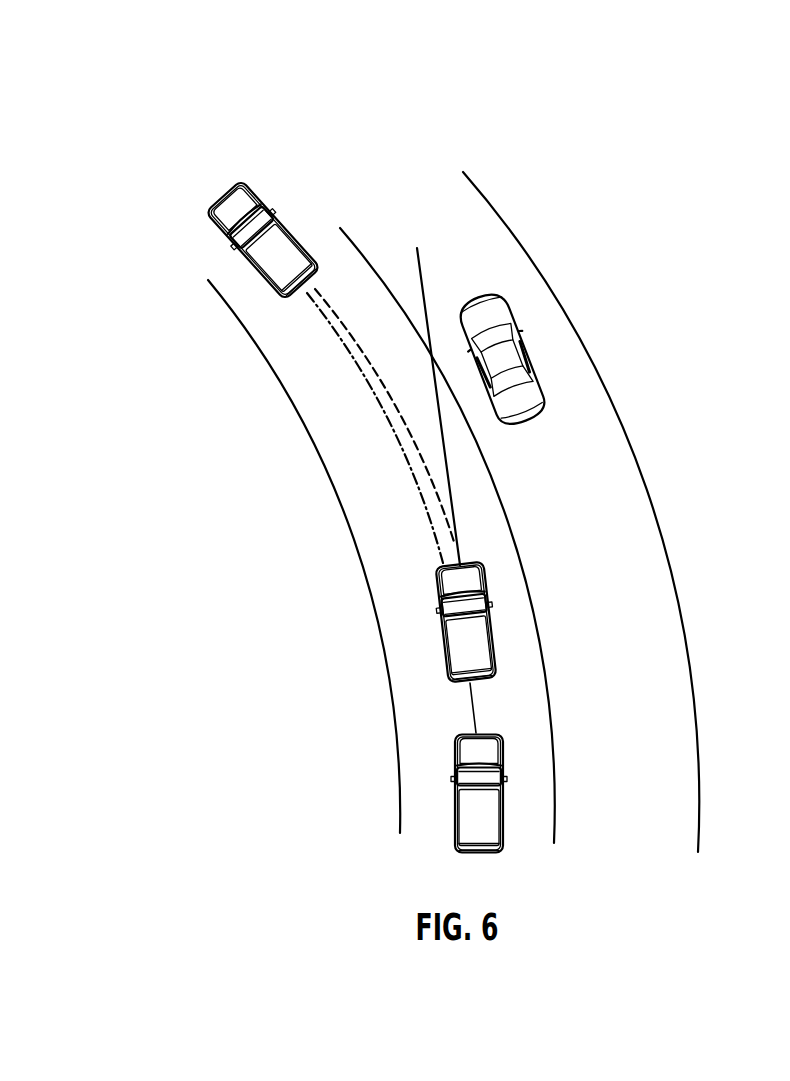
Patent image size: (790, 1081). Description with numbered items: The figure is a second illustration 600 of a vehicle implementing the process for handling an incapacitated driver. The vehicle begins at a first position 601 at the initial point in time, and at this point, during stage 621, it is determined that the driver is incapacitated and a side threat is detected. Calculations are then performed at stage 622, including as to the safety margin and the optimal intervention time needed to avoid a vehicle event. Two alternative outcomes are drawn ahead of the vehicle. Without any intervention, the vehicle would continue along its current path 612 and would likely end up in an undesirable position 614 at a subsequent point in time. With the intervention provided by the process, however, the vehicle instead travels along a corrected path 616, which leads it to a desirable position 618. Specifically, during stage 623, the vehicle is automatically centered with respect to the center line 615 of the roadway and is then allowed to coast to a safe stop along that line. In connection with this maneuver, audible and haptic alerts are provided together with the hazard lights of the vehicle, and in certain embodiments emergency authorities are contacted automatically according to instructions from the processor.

The second illustration 600 is at (116, 42).
The first position 601 is at (493, 834).
The current path 612 is at (430, 284).
The undesirable position 614 is at (535, 382).
The center line 615 is at (394, 512).
The corrected path 616 is at (440, 498).
The desirable position 618 is at (258, 193).
The stage 621 is at (470, 820).
The stage 622 is at (462, 648).
The stage 623 is at (247, 252).